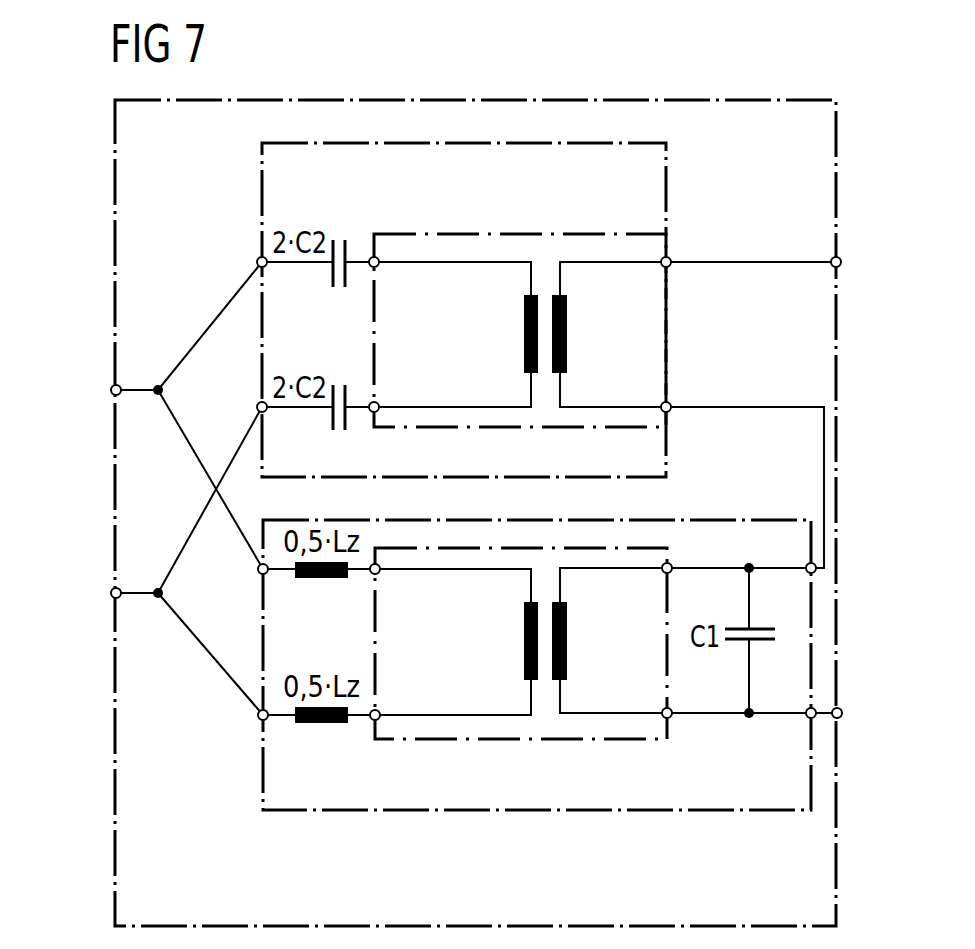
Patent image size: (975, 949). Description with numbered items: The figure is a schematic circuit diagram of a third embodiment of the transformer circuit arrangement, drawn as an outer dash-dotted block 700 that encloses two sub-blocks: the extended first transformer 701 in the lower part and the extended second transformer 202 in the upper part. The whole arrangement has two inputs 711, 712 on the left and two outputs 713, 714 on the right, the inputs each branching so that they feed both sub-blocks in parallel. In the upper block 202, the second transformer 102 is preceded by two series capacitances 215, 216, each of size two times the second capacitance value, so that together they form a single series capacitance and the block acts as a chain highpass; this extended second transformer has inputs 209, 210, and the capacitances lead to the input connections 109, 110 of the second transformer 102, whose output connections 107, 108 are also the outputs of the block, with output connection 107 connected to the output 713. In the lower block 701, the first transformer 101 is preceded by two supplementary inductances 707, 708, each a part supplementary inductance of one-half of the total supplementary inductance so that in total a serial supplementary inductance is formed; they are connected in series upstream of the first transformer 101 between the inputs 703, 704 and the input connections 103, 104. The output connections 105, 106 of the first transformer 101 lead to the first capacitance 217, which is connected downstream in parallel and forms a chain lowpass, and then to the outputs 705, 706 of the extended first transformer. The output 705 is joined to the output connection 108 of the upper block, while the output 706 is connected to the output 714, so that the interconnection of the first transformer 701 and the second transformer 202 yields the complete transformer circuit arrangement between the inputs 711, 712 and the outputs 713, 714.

The motor drive system / overall circuit 700 is at (113, 717).
The first transformer 701 is at (470, 812).
The second transformer 202 is at (260, 163).
The second transformer 102 is at (512, 240).
The first transformer 101 is at (580, 742).
The series capacitance 215 is at (348, 243).
The series capacitance 216 is at (347, 415).
The first capacitance 217 is at (735, 642).
The supplementary inductance 707 is at (320, 580).
The supplementary inductance 708 is at (320, 724).
The input 711 is at (110, 388).
The input 712 is at (110, 596).
The output 713 is at (840, 258).
The output 714 is at (841, 717).
The input 209 is at (258, 262).
The input 210 is at (258, 407).
The input connection 109 is at (378, 266).
The input connection 110 is at (378, 403).
The output connection 107 is at (670, 258).
The output connection 108 is at (670, 411).
The input 703 is at (259, 573).
The input 704 is at (259, 719).
The input connection 103 is at (379, 573).
The input connection 104 is at (379, 711).
The output connection 105 is at (663, 572).
The output connection 106 is at (663, 709).
The output 705 is at (807, 565).
The output 706 is at (807, 717).